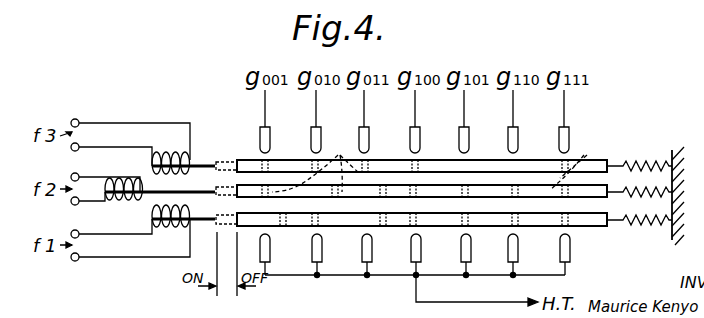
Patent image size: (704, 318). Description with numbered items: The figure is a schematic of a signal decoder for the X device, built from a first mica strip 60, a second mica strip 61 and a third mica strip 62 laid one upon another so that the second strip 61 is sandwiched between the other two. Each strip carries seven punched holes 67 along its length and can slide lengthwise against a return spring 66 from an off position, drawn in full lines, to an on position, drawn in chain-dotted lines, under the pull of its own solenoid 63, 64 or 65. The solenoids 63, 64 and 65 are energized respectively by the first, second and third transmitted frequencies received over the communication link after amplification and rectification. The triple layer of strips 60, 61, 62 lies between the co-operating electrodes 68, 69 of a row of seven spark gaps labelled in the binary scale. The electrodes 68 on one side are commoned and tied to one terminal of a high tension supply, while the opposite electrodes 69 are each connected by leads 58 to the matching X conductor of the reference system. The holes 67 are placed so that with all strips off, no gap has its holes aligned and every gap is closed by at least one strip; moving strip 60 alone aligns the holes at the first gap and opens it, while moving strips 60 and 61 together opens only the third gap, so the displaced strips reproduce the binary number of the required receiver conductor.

The leads 58 is at (564, 105).
The first mica strip 60 is at (598, 228).
The second mica strip 61 is at (640, 173).
The third mica strip 62 is at (607, 190).
The first solenoid 63 is at (178, 229).
The second solenoid 64 is at (128, 201).
The third solenoid 65 is at (161, 152).
The return spring 66 is at (655, 192).
The punched holes 67 is at (438, 164).
The electrodes 68 is at (411, 250).
The electrodes 69 is at (508, 140).